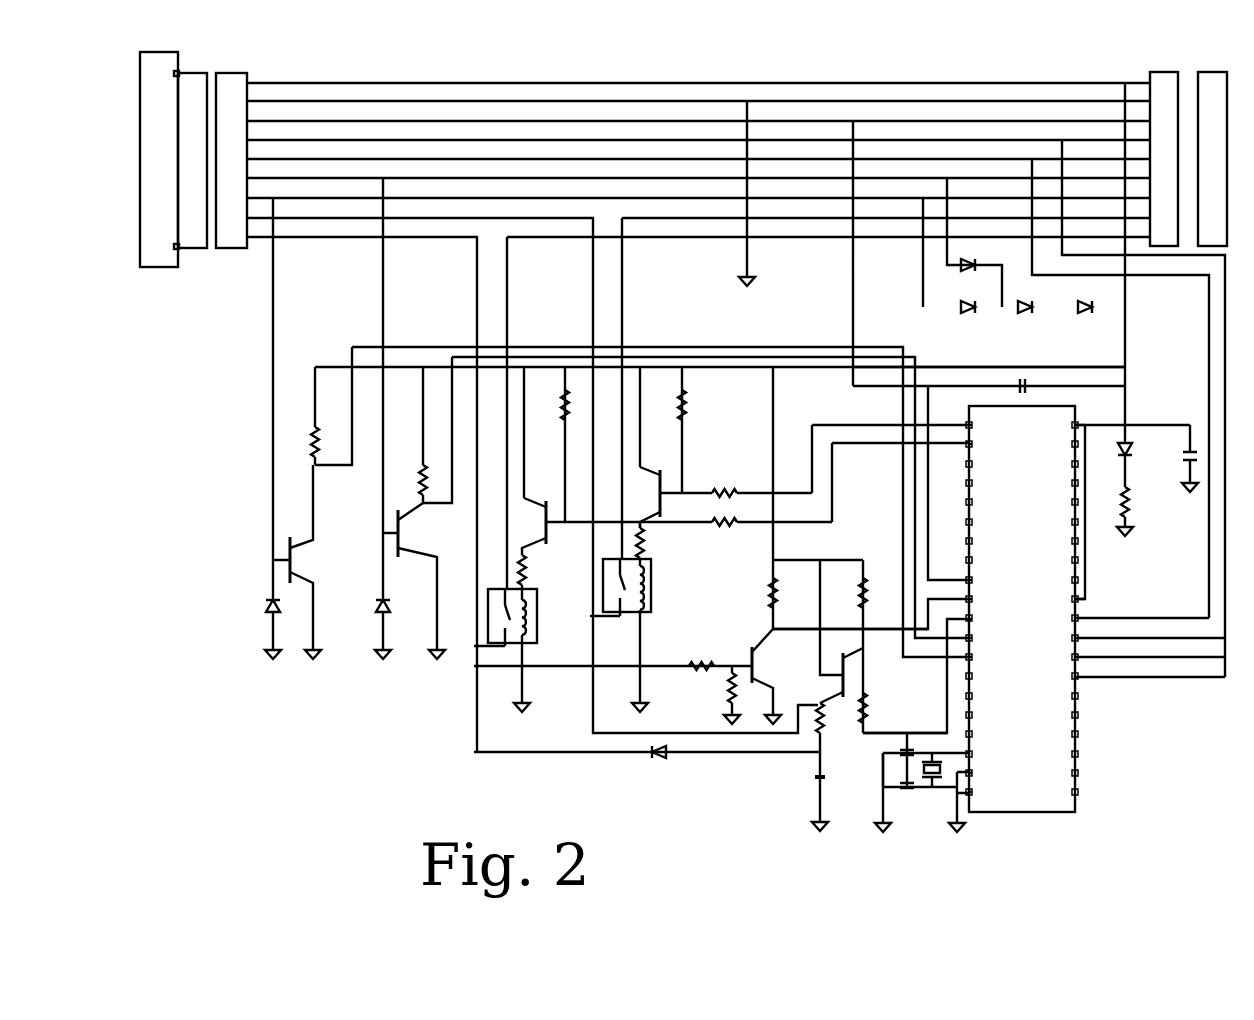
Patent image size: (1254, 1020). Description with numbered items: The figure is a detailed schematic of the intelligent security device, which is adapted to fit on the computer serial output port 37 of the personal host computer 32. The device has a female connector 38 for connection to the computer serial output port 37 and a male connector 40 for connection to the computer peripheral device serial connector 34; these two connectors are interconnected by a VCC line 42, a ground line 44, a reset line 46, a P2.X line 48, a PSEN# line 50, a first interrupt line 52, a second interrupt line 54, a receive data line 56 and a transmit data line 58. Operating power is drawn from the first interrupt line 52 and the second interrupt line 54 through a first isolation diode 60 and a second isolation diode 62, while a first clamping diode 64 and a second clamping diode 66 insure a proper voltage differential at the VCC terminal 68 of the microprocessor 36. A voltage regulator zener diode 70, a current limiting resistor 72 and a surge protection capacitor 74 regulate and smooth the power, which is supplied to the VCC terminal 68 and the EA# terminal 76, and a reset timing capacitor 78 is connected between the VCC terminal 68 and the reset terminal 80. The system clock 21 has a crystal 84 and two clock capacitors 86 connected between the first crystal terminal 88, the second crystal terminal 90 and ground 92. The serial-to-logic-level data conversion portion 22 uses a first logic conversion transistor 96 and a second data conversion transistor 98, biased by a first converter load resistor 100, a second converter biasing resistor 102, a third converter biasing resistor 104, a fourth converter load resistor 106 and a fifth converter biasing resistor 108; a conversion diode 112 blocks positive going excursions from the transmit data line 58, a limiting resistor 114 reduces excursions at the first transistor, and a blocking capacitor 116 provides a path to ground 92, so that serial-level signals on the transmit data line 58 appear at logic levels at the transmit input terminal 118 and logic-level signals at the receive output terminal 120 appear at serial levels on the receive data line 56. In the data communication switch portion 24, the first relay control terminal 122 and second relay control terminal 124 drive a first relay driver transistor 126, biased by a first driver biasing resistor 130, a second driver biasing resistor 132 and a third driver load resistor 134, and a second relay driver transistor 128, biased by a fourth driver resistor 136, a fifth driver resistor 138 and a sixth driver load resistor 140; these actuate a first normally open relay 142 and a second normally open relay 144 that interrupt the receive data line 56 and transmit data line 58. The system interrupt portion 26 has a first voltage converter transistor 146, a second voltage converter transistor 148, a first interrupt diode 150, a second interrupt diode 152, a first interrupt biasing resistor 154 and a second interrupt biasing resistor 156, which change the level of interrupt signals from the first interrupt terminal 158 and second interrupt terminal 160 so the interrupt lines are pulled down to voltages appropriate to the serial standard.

The system clock 21 is at (870, 773).
The RS-232 to TTL data conversion portion 22 is at (765, 629).
The data communication switch portion 24 is at (647, 526).
The system interrupt portion 26 is at (232, 470).
The personal host computer 32 is at (160, 275).
The computer peripheral device serial connector 34 is at (1212, 72).
The microprocessor 36 is at (1036, 526).
The computer serial output port 37 is at (191, 240).
The female connector 38 is at (232, 245).
The male connector 40 is at (1163, 72).
The VCC line 42 is at (322, 82).
The ground line 44 is at (400, 100).
The reset line 46 is at (483, 120).
The P2.X line 48 is at (558, 138).
The PSEN# line 50 is at (643, 158).
The INT 0 line 52 is at (708, 177).
The INT 1 line 54 is at (798, 197).
The receive data line 56 is at (645, 240).
The transmit data line 58 is at (735, 240).
The first isolation diode 60 is at (960, 268).
The second isolation diode 62 is at (962, 315).
The first clamping diode 64 is at (1022, 315).
The second clamping diode 66 is at (1095, 310).
The VCC terminal 68 is at (1070, 425).
The voltage regulator zener diode 70 is at (1130, 462).
The current limiting resistor 72 is at (1131, 493).
The surge protection capacitor 74 is at (1185, 460).
The EA# terminal 76 is at (1070, 597).
The reset timing capacitor 78 is at (1028, 380).
The reset terminal 80 is at (972, 582).
The crystal 84 is at (936, 780).
The clock capacitors 86 is at (905, 750).
The XTAL1 terminal 88 is at (975, 772).
The XTAL2 terminal 90 is at (975, 793).
The ground 92 is at (313, 660).
The first logic conversion transistor 96 is at (757, 670).
The second data conversion transistor 98 is at (840, 672).
The first converter load resistor 100 is at (778, 590).
The second converter biasing resistor 102 is at (868, 590).
The third converter biasing resistor 104 is at (870, 708).
The fourth converter load resistor 106 is at (825, 715).
The fifth converter biasing resistor 108 is at (730, 700).
The conversion diode 112 is at (668, 755).
The limiting resistor 114 is at (698, 668).
The blocking capacitor 116 is at (815, 777).
The P3.1 terminal 118 is at (972, 620).
The P3.0 terminal 120 is at (972, 600).
The P1.0 terminal 122 is at (972, 425).
The P1.1 terminal 124 is at (972, 444).
The first relay driver transistor 126 is at (655, 480).
The second relay driver transistor 128 is at (548, 515).
The first driver biasing resistor 130 is at (565, 392).
The second driver biasing resistor 132 is at (726, 526).
The third driver load resistor 134 is at (526, 572).
The fourth driver resistor 136 is at (686, 395).
The fifth driver resistor 138 is at (742, 475).
The sixth driver load resistor 140 is at (645, 580).
The first normally open relay 142 is at (530, 623).
The second normally open relay 144 is at (643, 612).
The first voltage converter transistor 146 is at (445, 535).
The second voltage converter transistor 148 is at (285, 553).
The first interrupt diode 150 is at (385, 612).
The second interrupt diode 152 is at (266, 604).
The first interrupt biasing resistor 154 is at (420, 485).
The second interrupt biasing resistor 156 is at (315, 430).
The P3.2 terminal 158 is at (972, 639).
The P3.3 terminal 160 is at (972, 658).